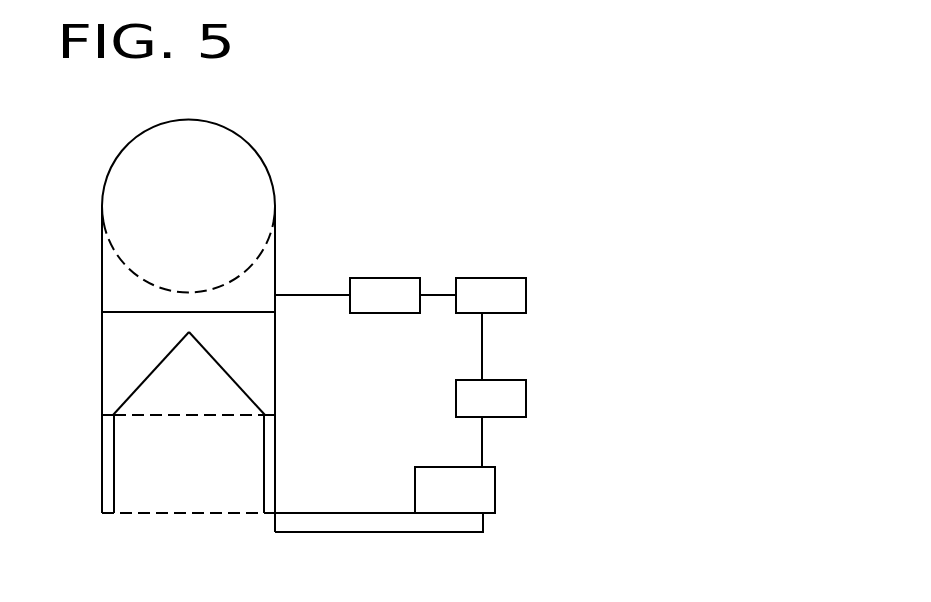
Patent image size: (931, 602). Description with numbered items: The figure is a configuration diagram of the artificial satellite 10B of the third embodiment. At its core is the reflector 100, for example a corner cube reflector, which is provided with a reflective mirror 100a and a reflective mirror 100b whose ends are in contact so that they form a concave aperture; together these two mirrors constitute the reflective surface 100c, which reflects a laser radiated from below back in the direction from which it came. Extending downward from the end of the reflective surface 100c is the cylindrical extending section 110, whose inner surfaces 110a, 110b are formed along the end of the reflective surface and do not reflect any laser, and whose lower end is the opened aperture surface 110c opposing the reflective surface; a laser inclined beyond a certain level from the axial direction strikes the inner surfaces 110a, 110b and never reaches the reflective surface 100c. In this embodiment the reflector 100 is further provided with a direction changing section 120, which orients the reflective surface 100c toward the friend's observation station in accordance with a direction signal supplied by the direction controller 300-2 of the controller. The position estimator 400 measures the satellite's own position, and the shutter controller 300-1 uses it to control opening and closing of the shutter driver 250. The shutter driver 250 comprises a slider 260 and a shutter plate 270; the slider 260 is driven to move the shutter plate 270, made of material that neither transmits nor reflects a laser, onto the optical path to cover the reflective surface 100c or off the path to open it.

The artificial satellite 10B is at (428, 177).
The direction changing section 120 is at (106, 251).
The reflector 100 is at (106, 321).
The reflective mirror 100a is at (136, 378).
The reflective mirror 100b is at (243, 378).
The reflective surface 100c is at (235, 470).
The extending section 110 is at (283, 415).
The inner surface 110a is at (112, 490).
The inner surface 110b is at (266, 490).
The aperture surface 110c is at (190, 515).
The direction controller 300-2 is at (386, 278).
The position estimator 400 is at (526, 295).
The shutter controller 300-1 is at (526, 397).
The shutter driver 250 is at (575, 473).
The slider 260 is at (495, 492).
The shutter plate 270 is at (483, 522).